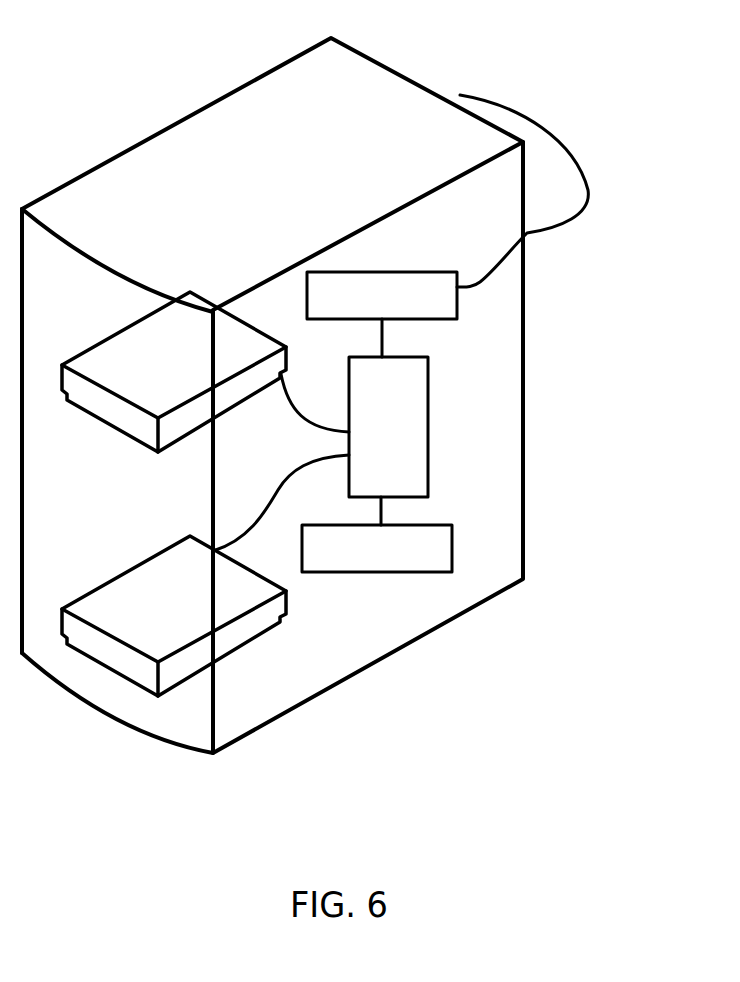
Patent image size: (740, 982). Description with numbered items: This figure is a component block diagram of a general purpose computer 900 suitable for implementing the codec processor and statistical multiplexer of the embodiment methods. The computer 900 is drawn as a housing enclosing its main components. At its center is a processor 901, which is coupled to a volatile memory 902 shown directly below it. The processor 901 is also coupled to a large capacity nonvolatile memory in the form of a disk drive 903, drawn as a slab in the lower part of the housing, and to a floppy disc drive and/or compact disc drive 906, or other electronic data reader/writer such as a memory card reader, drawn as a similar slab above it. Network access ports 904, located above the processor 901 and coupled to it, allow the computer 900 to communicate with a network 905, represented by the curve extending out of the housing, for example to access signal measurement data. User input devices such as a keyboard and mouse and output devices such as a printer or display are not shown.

The computer 900 is at (332, 37).
The processor 901 is at (368, 442).
The volatile memory 902 is at (357, 564).
The disk drive 903 is at (286, 612).
The network access ports 904 is at (362, 308).
The network 905 is at (533, 229).
The compact disc drive 906 is at (252, 397).